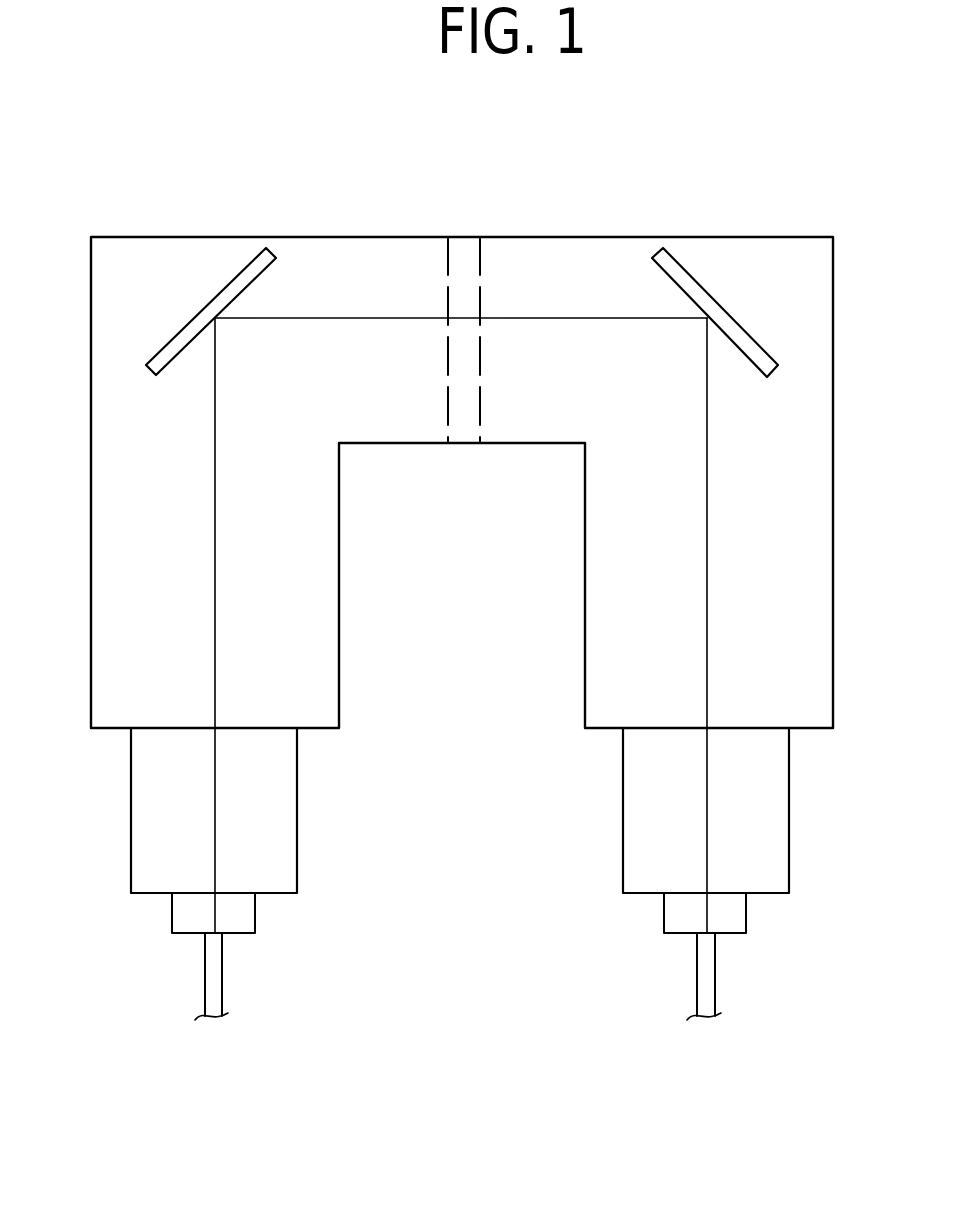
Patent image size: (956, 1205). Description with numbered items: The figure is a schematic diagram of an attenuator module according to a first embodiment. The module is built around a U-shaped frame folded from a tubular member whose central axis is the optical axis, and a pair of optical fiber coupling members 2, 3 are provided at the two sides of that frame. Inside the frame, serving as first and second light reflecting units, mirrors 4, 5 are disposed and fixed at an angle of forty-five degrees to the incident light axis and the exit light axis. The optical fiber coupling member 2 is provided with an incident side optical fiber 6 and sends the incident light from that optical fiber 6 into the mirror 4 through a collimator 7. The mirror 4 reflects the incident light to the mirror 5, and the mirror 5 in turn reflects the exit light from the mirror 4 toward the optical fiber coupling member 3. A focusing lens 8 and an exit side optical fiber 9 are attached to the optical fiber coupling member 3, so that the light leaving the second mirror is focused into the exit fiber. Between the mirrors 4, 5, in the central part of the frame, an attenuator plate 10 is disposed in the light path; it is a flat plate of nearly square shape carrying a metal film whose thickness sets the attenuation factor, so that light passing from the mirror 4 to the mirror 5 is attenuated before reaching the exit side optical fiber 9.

The optical fiber coupling member 2 is at (177, 874).
The optical fiber coupling member 3 is at (742, 874).
The mirror 4 is at (235, 275).
The mirror 5 is at (695, 278).
The incident side optical fiber 6 is at (210, 980).
The collimator 7 is at (150, 787).
The focusing lens 8 is at (772, 798).
The exit side optical fiber 9 is at (705, 988).
The attenuator plate 10 is at (468, 283).